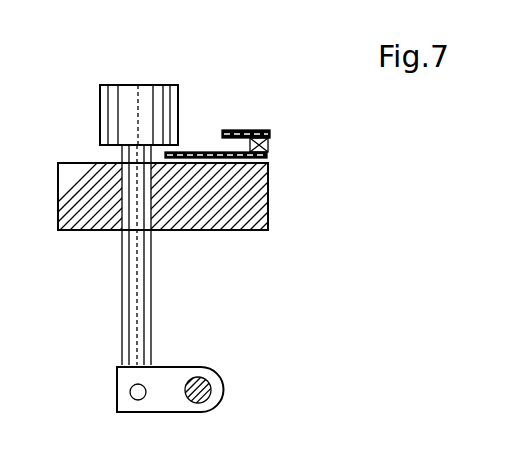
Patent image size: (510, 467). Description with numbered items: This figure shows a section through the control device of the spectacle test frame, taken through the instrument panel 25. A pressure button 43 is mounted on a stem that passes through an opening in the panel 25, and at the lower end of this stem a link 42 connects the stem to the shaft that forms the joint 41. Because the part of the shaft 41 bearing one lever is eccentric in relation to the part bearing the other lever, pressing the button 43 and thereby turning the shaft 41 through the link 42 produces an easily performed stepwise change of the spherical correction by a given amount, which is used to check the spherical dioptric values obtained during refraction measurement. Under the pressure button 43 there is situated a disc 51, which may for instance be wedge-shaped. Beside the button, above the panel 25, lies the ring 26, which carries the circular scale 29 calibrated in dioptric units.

The instrument panel 25 is at (262, 215).
The ring 26 is at (270, 142).
The circular scale 29 is at (250, 133).
The joint 41 is at (208, 384).
The link 42 is at (172, 378).
The pressure button 43 is at (108, 124).
The disc 51 is at (190, 155).